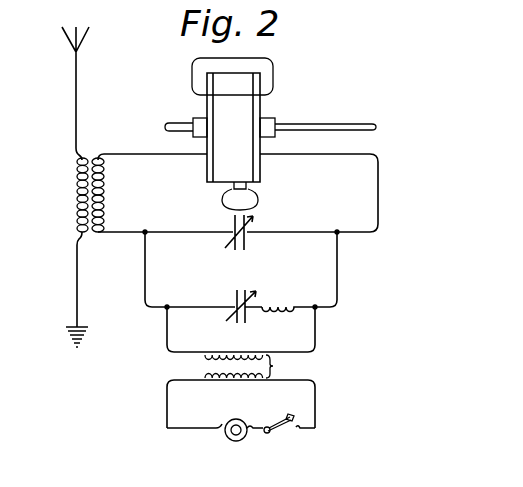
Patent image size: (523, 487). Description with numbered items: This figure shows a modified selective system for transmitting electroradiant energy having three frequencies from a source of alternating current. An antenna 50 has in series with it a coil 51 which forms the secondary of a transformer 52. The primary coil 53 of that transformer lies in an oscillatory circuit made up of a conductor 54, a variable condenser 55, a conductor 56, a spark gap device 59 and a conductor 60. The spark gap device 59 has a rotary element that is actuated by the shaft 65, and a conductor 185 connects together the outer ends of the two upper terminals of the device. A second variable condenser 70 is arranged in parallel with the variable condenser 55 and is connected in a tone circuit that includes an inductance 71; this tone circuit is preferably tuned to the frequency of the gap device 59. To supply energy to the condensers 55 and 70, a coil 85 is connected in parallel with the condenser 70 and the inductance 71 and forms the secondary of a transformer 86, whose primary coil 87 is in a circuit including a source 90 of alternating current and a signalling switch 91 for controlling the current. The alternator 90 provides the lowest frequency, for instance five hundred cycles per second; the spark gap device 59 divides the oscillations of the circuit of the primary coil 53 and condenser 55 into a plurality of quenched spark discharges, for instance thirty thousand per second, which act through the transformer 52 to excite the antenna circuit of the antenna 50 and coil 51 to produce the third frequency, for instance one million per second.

The antenna 50 is at (72, 106).
The coil 51 is at (76, 193).
The transformer 52 is at (86, 242).
The primary coil 53 is at (104, 192).
The conductor 54 is at (175, 232).
The variable condenser 55 is at (231, 231).
The conductor 56 is at (307, 232).
The spark gap device 59 is at (272, 140).
The conductor 60 is at (131, 156).
The shaft 65 is at (322, 124).
The variable condenser 70 is at (233, 305).
The inductance 71 is at (284, 306).
The coil 85 is at (241, 332).
The transformer 86 is at (282, 366).
The primary coil 87 is at (241, 400).
The source of alternating current 90 is at (215, 443).
The signalling switch 91 is at (289, 435).
The conductor 185 is at (274, 62).